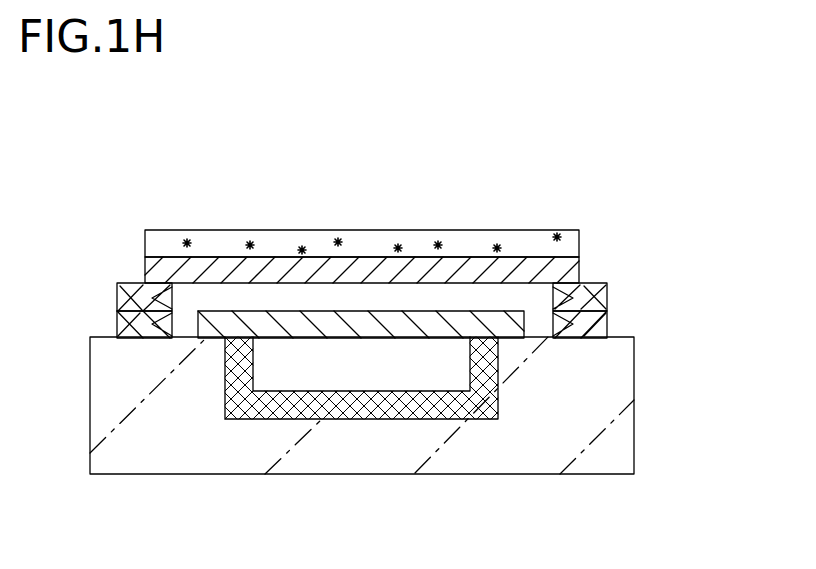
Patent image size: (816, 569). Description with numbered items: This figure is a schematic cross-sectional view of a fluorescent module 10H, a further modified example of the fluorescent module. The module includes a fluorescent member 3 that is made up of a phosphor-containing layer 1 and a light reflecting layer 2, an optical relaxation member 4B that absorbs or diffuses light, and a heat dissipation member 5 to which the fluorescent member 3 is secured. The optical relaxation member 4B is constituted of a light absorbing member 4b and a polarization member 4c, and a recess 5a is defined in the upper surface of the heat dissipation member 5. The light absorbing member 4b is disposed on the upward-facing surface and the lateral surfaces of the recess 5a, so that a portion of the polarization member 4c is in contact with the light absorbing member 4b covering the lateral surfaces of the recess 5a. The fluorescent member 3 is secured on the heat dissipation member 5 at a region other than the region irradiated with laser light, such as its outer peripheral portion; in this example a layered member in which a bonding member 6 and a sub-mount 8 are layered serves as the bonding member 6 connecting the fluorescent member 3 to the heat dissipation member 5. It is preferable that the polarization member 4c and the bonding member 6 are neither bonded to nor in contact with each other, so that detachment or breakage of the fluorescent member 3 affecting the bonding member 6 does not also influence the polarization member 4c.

The phosphor-containing layer 1 is at (438, 247).
The light reflecting layer 2 is at (488, 273).
The fluorescent member 3 is at (497, 155).
The optical relaxation member 4B is at (348, 130).
The light absorbing member 4b is at (357, 407).
The polarization member 4c is at (295, 327).
The heat dissipation member 5 is at (603, 390).
The recess 5a is at (498, 365).
The bonding member 6 is at (593, 323).
The sub-mount 8 is at (595, 300).
The fluorescent module 10H is at (622, 225).